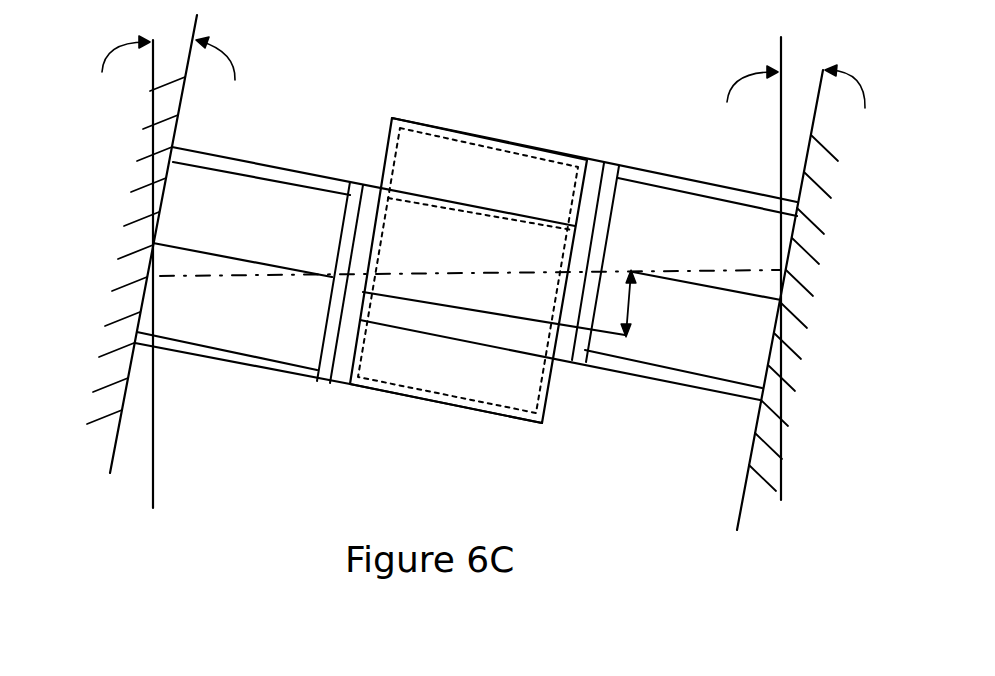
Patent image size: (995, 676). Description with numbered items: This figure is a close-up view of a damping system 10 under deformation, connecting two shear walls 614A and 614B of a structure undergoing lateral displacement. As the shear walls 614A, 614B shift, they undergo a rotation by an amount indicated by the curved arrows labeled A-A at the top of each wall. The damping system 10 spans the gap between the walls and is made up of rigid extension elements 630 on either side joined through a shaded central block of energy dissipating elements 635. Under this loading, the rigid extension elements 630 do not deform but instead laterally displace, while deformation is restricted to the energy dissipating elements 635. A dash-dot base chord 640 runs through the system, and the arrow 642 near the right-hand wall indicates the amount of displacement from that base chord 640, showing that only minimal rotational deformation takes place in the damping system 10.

The damping system 10 is at (507, 81).
The shear wall 614A is at (800, 122).
The shear wall 614B is at (141, 486).
The rigid extension elements 630 is at (245, 193).
The energy dissipating elements 635 is at (530, 178).
The base chord 640 is at (192, 275).
The arrow 642 is at (626, 312).